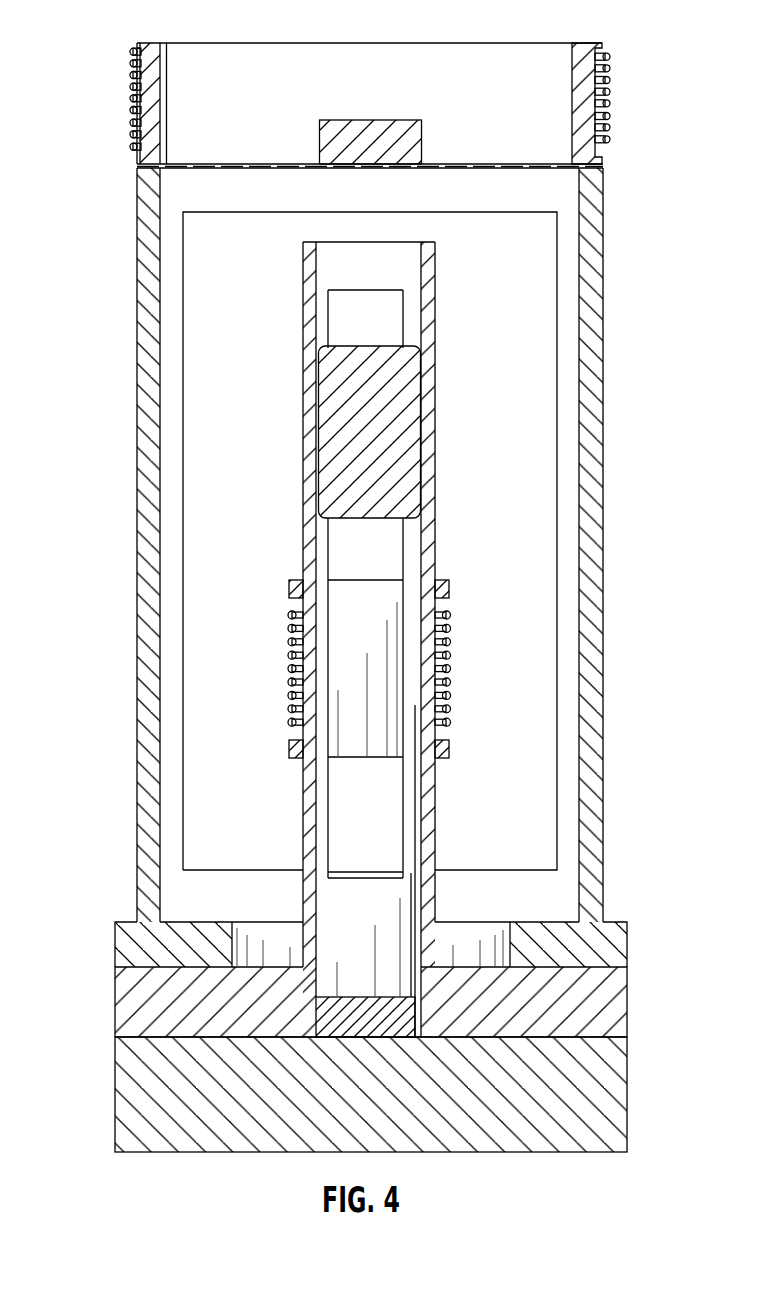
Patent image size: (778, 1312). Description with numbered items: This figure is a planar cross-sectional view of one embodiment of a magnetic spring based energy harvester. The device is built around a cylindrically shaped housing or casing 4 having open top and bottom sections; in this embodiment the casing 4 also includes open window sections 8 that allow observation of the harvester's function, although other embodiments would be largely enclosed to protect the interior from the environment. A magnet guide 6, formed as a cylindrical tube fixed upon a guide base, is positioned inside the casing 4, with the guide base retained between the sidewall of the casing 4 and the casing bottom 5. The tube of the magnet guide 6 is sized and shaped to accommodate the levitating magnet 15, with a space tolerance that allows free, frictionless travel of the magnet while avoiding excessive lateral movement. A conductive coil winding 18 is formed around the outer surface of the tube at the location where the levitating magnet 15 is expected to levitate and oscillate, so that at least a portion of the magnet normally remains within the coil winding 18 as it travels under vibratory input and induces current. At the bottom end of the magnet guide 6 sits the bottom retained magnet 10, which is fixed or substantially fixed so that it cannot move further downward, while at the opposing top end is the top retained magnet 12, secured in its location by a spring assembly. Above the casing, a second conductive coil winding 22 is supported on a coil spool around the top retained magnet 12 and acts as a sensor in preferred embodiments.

The casing 4 is at (605, 668).
The casing bottom 5 is at (615, 1095).
The magnet guide 6 is at (425, 355).
The open window sections 8 is at (198, 444).
The bottom retained magnet 10 is at (337, 918).
The top retained magnet 12 is at (398, 135).
The levitating magnet 15 is at (410, 450).
The conductive coil winding 18 is at (450, 655).
The second conductive coil winding 22 is at (611, 117).